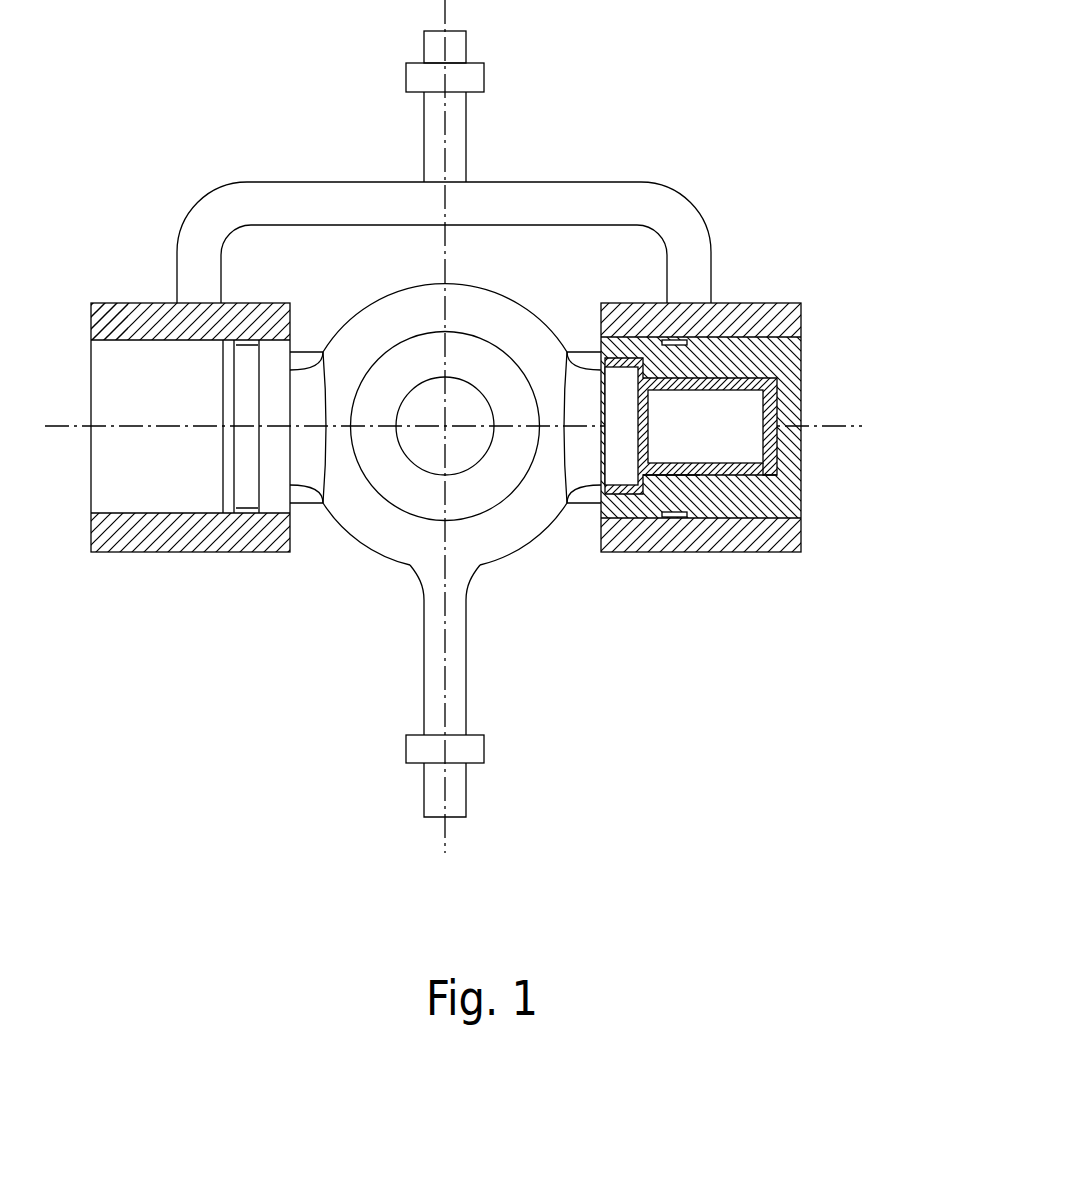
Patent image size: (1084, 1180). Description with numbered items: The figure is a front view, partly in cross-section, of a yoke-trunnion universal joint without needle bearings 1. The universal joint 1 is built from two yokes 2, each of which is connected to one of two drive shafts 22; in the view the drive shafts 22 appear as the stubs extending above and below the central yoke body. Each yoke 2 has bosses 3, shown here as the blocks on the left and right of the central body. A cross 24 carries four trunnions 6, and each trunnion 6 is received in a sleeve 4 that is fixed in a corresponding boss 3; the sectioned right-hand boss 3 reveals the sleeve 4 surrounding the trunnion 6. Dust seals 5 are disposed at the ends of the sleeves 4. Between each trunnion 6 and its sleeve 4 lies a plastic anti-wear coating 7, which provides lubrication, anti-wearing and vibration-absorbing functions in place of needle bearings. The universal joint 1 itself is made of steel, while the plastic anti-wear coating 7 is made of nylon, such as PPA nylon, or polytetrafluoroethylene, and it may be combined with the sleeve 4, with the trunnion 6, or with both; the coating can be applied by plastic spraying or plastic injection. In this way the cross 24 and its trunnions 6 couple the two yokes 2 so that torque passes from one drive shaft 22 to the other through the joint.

The yoke-trunnion universal joint without needle bearings 1 is at (718, 190).
The yoke 2 is at (453, 122).
The drive shaft 22 is at (460, 792).
The boss 3 is at (755, 308).
The sleeve 4 is at (783, 355).
The dust seal 5 is at (628, 452).
The trunnion 6 is at (745, 437).
The plastic anti-wear coating 7 is at (750, 483).
The cross 24 is at (672, 480).